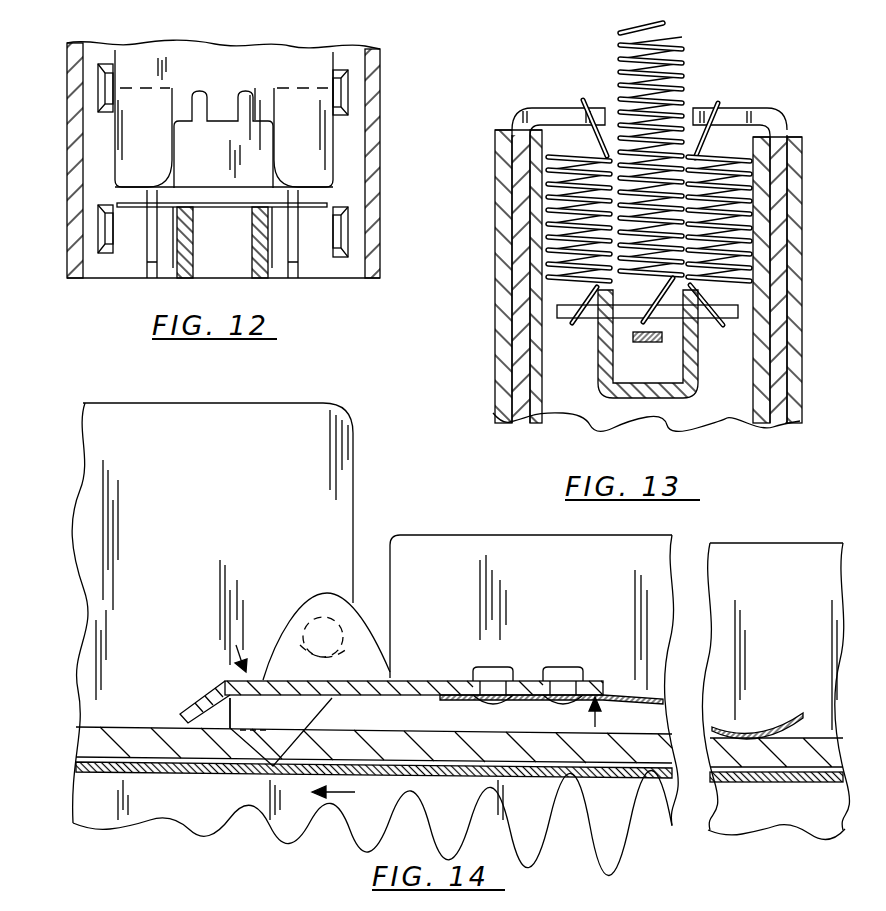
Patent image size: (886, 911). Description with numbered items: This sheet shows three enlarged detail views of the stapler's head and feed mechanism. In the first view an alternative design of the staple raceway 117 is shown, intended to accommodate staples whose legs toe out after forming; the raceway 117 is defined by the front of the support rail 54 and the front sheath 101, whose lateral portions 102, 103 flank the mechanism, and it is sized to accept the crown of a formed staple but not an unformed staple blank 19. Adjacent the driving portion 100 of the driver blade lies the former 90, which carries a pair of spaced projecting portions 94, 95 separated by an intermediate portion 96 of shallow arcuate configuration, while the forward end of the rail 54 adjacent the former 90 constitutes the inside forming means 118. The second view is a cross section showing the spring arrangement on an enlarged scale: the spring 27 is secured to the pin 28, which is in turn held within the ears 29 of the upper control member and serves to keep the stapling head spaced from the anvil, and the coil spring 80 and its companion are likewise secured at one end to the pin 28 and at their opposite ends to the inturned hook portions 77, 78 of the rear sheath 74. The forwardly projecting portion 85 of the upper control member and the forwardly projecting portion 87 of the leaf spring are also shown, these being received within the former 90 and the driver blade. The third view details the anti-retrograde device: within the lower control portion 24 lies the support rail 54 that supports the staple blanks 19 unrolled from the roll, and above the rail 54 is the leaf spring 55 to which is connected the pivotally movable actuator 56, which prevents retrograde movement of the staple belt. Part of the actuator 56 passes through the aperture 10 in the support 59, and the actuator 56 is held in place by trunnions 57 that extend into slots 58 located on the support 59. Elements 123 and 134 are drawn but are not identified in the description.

In FIG. 14, the aperture 10 is at (236, 752).
In FIG. 12, the staple blanks 19 is at (333, 206).
In FIG. 13, the staple blanks 19 is at (733, 153).
In FIG. 14, the staple blanks 19 is at (188, 773).
In FIG. 13, the lower control portion 24 is at (770, 156).
In FIG. 13, the spring 27 is at (670, 70).
In FIG. 13, the pin 28 is at (672, 316).
In FIG. 13, the ears 29 is at (613, 293).
In FIG. 14, the support rail 54 is at (628, 818).
In FIG. 14, the leaf spring 55 is at (620, 688).
In FIG. 14, the actuator 56 is at (297, 610).
In FIG. 14, the trunnions 57 is at (317, 612).
In FIG. 14, the slots 58 is at (368, 630).
In FIG. 14, the support 59 is at (480, 744).
In FIG. 13, the rear sheath 74 is at (777, 222).
In FIG. 13, the inturned hook portion 77 is at (577, 107).
In FIG. 13, the inturned hook portion 78 is at (727, 110).
In FIG. 13, the coil spring 80 is at (567, 157).
In FIG. 13, the forwardly projecting portion 85 is at (698, 366).
In FIG. 13, the forwardly projecting portion 87 is at (640, 345).
In FIG. 12, the former 90 is at (242, 58).
In FIG. 12, the projecting portion 94 is at (133, 157).
In FIG. 12, the projecting portion 95 is at (320, 165).
In FIG. 12, the intermediate portion 96 is at (217, 122).
In FIG. 12, the driving portion 100 is at (217, 182).
In FIG. 12, the front sheath 101 is at (347, 268).
In FIG. 13, the front sheath 101 is at (790, 254).
In FIG. 12, the lateral portion 102 is at (78, 104).
In FIG. 12, the lateral portion 103 is at (370, 93).
In FIG. 12, the staple raceway 117 is at (253, 213).
In FIG. 12, the inside forming means 118 is at (182, 215).
In FIG. 12, the lead 123 is at (157, 230).
In FIG. 12, the latch opening 134 is at (113, 85).